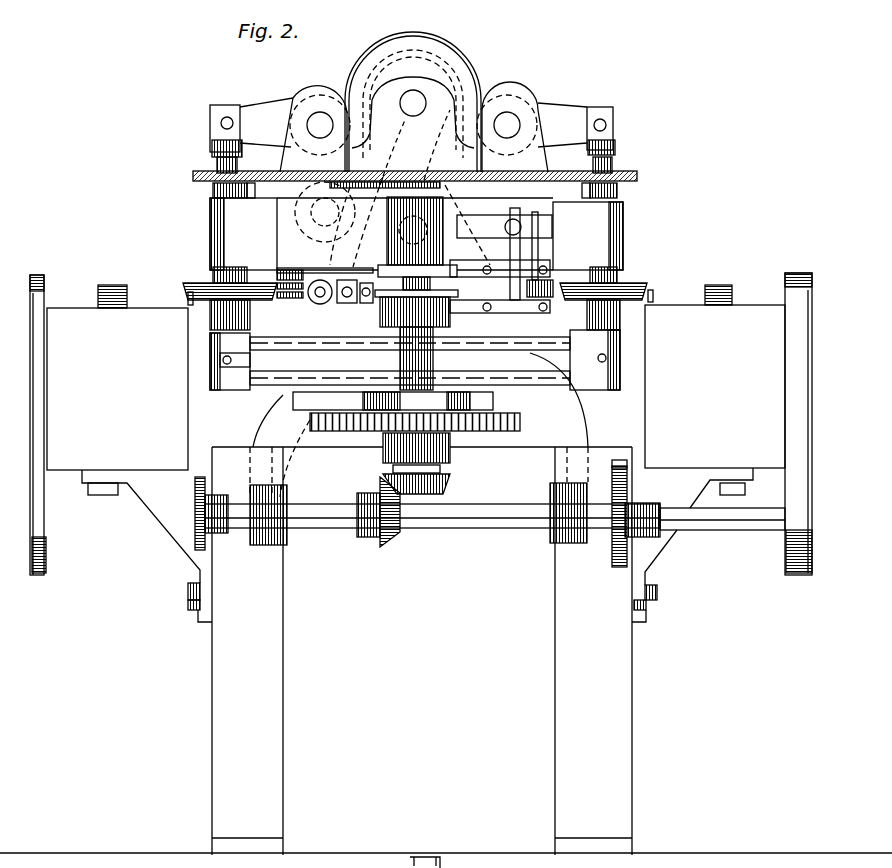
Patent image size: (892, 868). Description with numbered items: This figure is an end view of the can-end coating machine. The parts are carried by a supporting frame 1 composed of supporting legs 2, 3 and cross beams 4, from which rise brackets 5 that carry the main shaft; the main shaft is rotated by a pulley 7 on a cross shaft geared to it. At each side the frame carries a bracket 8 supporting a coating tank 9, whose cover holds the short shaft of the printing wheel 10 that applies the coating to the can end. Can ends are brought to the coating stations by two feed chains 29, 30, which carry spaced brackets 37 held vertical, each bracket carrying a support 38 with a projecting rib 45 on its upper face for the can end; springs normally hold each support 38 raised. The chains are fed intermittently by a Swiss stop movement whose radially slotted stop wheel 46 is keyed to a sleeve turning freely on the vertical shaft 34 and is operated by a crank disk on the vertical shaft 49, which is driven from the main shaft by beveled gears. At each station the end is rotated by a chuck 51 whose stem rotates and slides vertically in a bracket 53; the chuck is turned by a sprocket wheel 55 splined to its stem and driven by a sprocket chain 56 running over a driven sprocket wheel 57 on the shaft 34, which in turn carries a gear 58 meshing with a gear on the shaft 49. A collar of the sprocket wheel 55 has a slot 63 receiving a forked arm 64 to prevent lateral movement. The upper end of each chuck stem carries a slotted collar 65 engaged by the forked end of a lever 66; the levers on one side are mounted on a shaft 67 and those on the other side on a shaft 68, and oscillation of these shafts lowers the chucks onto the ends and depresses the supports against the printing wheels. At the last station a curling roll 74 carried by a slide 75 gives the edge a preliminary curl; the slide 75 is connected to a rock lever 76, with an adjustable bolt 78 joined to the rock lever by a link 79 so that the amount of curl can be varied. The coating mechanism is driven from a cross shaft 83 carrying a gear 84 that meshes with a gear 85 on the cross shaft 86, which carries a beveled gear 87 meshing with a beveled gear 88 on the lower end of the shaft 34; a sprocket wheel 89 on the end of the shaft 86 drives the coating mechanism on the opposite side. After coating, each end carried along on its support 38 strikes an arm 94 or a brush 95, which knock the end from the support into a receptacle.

The supporting frame 1 is at (625, 706).
The supporting leg 2 is at (270, 727).
The supporting leg 3 is at (563, 689).
The cross beam 4 is at (417, 651).
The bracket 5 is at (568, 424).
The pulley 7 is at (411, 36).
The bracket 8 is at (153, 507).
The coating tank 9 is at (416, 377).
The printing wheel 10 is at (188, 298).
The feed chain 29 is at (295, 340).
The feed chain 30 is at (280, 390).
The vertical shaft 34 is at (425, 178).
The bracket 37 is at (216, 374).
The support 38 is at (195, 303).
The projecting rib 45 is at (453, 302).
The stop wheel 46 is at (310, 398).
The vertical shaft 49 is at (447, 238).
The chuck 51 is at (207, 284).
The bracket 53 is at (210, 237).
The sprocket wheel 55 is at (205, 185).
The sprocket chain 56 is at (503, 176).
The driven sprocket wheel 57 is at (386, 178).
The gear 58 is at (348, 433).
The slot 63 is at (233, 199).
The forked arm 64 is at (260, 199).
The slotted collar 65 is at (212, 148).
The lever 66 is at (268, 118).
The shaft 67 is at (507, 112).
The shaft 68 is at (320, 112).
The curling roll 74 is at (278, 280).
The slide 75 is at (492, 290).
The rock lever 76 is at (350, 230).
The adjustable bolt 78 is at (348, 306).
The link 79 is at (340, 300).
The cross shaft 83 is at (757, 531).
The gear 84 is at (620, 565).
The gear 85 is at (628, 468).
The cross shaft 86 is at (448, 520).
The beveled gear 87 is at (382, 549).
The beveled gear 88 is at (447, 486).
The sprocket wheel 89 is at (207, 545).
The arm 94 is at (517, 256).
The brush 95 is at (538, 258).